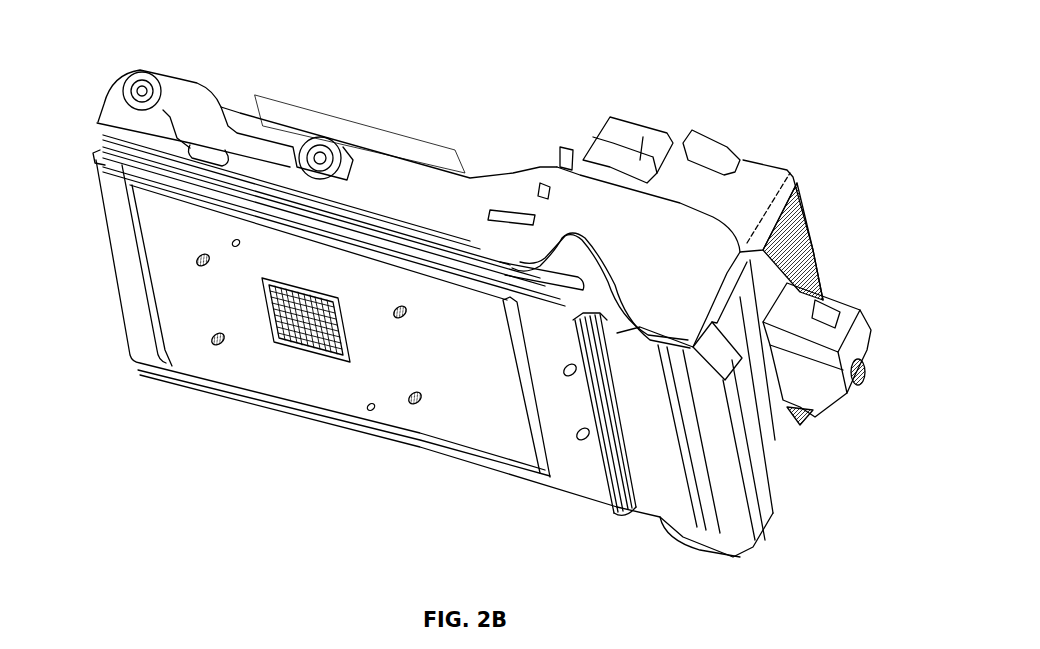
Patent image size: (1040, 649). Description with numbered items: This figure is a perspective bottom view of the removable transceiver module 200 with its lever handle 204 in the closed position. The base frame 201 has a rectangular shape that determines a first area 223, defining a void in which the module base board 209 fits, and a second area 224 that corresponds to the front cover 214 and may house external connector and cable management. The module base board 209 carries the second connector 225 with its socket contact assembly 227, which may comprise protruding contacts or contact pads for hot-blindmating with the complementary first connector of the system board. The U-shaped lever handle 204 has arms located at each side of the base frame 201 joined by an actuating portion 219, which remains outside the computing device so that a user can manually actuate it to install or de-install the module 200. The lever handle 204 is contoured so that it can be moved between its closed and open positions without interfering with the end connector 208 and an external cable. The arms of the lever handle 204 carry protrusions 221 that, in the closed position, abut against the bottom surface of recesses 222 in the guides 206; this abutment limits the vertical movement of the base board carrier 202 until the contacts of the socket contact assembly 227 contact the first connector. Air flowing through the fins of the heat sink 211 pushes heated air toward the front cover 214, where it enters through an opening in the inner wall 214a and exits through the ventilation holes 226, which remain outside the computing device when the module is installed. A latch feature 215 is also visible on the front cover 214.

The removable transceiver module 200 is at (724, 106).
The base frame 201 is at (125, 244).
The base board carrier 202 is at (150, 342).
The lever handle 204 is at (786, 546).
The guides 206 is at (96, 157).
The end connector 208 is at (843, 417).
The module base board 209 is at (383, 420).
The heat sink 211 is at (380, 128).
The front cover 214 is at (770, 183).
The inner wall 214a is at (598, 105).
The latch tab 215 is at (727, 157).
The actuating portion 219 is at (747, 548).
The protrusions 221 is at (537, 253).
The recesses 222 is at (524, 265).
The first area 223 is at (247, 385).
The second area 224 is at (575, 468).
The second connector 225 is at (292, 365).
The ventilation holes 226 is at (805, 251).
The socket contact assembly 227 is at (326, 362).